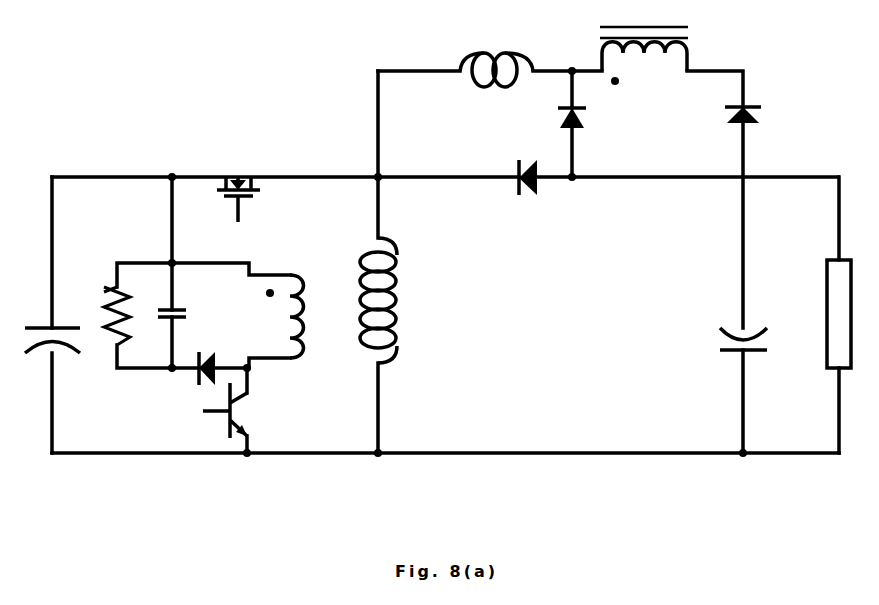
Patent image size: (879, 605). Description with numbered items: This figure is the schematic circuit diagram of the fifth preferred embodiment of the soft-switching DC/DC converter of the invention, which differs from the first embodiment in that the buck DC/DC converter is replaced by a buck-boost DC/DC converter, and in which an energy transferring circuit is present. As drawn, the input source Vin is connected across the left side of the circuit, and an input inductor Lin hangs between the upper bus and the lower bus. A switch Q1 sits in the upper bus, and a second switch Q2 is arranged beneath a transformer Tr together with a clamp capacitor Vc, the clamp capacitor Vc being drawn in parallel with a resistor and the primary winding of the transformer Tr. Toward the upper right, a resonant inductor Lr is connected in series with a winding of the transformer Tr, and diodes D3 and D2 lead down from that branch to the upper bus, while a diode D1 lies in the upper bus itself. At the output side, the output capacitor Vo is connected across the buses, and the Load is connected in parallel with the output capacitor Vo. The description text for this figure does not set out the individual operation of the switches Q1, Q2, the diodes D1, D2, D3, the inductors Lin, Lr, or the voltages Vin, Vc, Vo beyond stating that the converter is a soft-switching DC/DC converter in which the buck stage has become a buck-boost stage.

The input voltage source / input capacitor Vin is at (48, 323).
The first switch (MOSFET) Q1 is at (238, 183).
The second switch (transistor) with anti-parallel diode Q2 is at (207, 395).
The clamp capacitor voltage Vc is at (161, 313).
The transformer Tr is at (477, 207).
The input inductor Lin is at (399, 300).
The resonant inductor Lr is at (496, 56).
The first diode D1 is at (523, 191).
The second diode D2 is at (729, 108).
The third diode D3 is at (554, 124).
The output capacitor / output voltage Vo is at (732, 344).
The load Load is at (820, 329).